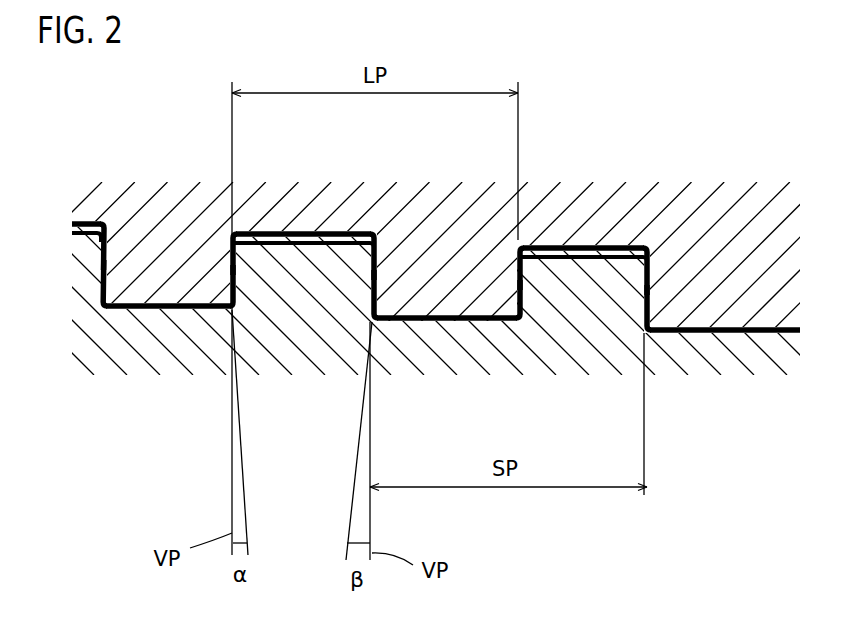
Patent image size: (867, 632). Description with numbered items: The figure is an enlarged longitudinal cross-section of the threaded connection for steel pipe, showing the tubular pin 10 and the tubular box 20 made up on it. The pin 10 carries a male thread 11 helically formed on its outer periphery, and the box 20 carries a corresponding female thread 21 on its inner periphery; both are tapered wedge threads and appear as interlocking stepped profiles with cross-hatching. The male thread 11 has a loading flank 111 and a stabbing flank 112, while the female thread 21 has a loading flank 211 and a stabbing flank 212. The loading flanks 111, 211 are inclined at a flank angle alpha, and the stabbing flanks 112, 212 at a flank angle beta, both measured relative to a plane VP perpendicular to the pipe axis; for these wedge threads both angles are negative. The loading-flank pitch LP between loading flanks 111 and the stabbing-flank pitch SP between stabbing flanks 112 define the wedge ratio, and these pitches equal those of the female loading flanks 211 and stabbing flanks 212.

The pin 10 is at (152, 392).
The male thread 11 is at (300, 290).
The loading flank 111 is at (222, 300).
The stabbing flank 112 is at (113, 275).
The box 20 is at (765, 168).
The female thread 21 is at (167, 260).
The loading flank 211 is at (252, 236).
The stabbing flank 212 is at (100, 258).